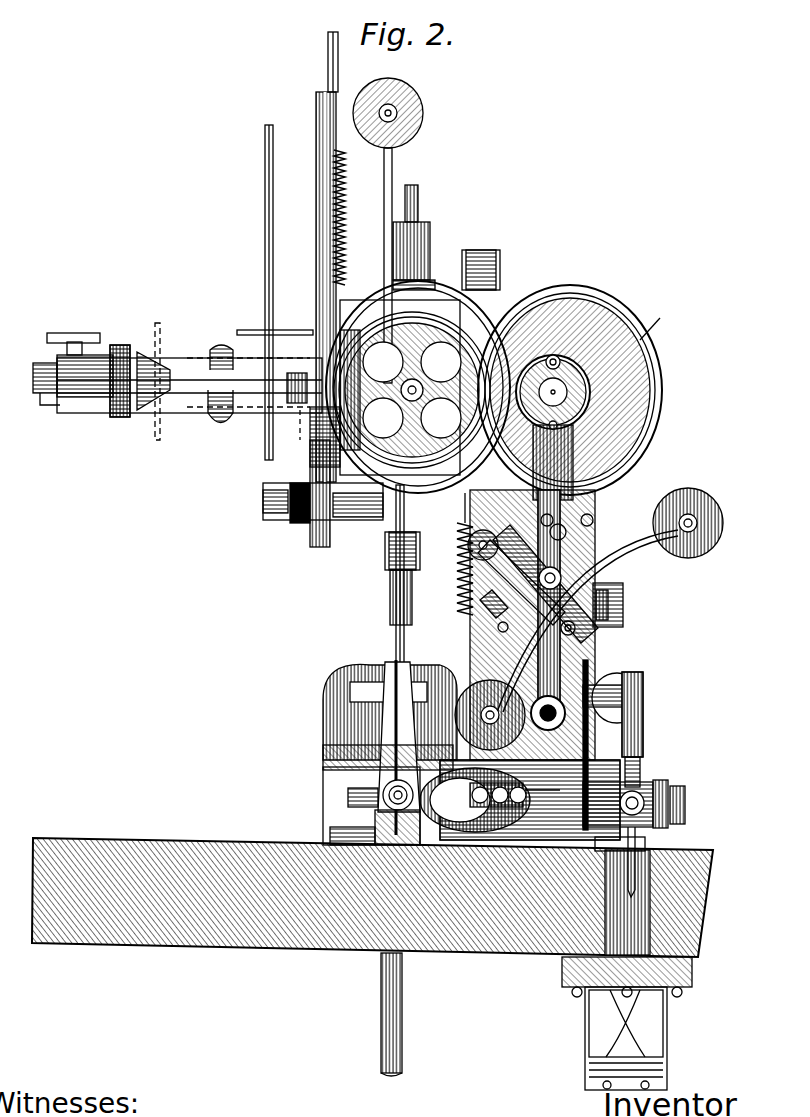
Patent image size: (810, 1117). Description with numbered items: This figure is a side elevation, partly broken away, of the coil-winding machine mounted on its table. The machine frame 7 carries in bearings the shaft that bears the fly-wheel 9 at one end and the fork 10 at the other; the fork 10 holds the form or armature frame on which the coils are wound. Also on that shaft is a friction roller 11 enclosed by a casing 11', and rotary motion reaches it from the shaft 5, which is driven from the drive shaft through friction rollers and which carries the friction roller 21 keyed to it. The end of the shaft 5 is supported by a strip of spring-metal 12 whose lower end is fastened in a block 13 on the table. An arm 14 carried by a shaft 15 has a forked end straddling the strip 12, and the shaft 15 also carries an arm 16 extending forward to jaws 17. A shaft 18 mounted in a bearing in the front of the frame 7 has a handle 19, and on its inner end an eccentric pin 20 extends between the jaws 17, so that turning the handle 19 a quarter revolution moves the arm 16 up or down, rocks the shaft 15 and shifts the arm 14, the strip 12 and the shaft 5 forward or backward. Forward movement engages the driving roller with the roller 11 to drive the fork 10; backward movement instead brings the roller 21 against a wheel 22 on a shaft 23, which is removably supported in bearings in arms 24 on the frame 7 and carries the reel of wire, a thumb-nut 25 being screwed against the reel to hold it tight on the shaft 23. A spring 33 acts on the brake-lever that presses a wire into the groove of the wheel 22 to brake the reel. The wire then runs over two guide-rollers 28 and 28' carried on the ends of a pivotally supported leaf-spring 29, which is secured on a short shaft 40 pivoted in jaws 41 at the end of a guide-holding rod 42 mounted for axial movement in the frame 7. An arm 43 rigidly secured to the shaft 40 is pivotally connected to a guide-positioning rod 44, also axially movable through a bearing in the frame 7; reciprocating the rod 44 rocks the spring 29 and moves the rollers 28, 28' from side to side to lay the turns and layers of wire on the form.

The shaft 5 is at (415, 398).
The frame 7 is at (578, 748).
The fly-wheel 9 is at (652, 393).
The fork 10 is at (561, 362).
The friction roller 11 is at (411, 385).
The casing 11' is at (665, 335).
The strip of spring-metal 12 is at (405, 990).
The block 13 is at (370, 826).
The arm 14 is at (360, 758).
The shaft 15 is at (381, 790).
The arm 16 is at (390, 737).
The jaws 17 is at (483, 817).
The shaft 18 is at (528, 800).
The handle 19 is at (640, 724).
The pin 20 is at (475, 810).
The friction roller 21 is at (418, 387).
The wheel 22 is at (312, 435).
The shaft 23 is at (255, 395).
The arms 24 is at (180, 358).
The thumb-nut 25 is at (118, 418).
The guide-roller 28 is at (490, 715).
The guide-roller 28' is at (702, 523).
The leaf-spring 29 is at (600, 560).
The spring 33 is at (344, 205).
The short shaft 40 is at (604, 583).
The jaws 41 is at (590, 622).
The guide-holding rod 42 is at (560, 664).
The arm 43 is at (480, 636).
The guide-positioning rod 44 is at (500, 558).